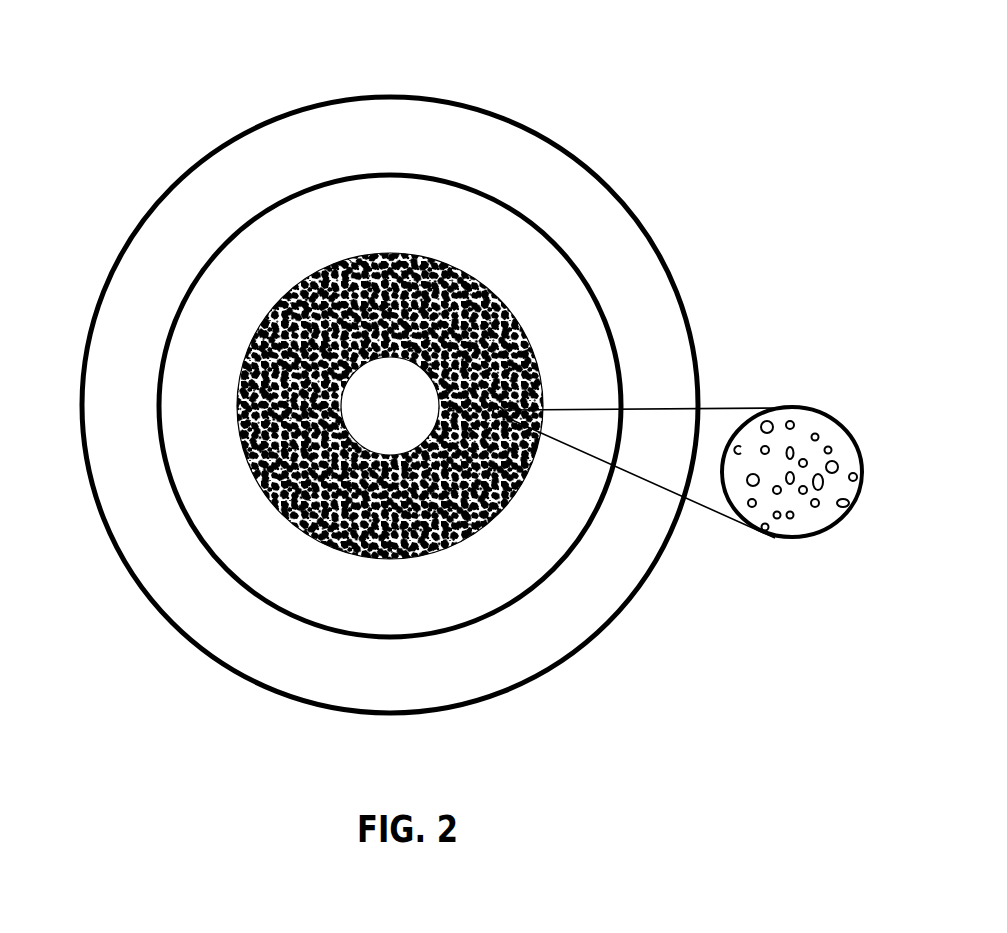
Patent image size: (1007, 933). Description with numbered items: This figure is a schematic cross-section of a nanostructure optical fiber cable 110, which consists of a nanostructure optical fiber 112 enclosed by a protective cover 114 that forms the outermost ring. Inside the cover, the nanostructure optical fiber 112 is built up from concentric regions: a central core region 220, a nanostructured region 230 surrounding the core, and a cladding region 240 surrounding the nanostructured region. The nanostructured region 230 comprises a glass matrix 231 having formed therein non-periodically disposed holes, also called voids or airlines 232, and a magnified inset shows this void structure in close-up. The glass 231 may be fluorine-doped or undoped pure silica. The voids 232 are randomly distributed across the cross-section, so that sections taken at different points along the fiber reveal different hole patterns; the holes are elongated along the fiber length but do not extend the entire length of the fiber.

The nanostructure optical fiber cable 110 is at (185, 52).
The protective cover 114 is at (520, 155).
The nanostructure optical fiber 112 is at (775, 187).
The cladding region 240 is at (507, 250).
The nanostructured region 230 is at (468, 315).
The core region 220 is at (392, 407).
The glass matrix 231 is at (812, 425).
The voids 232 is at (819, 490).